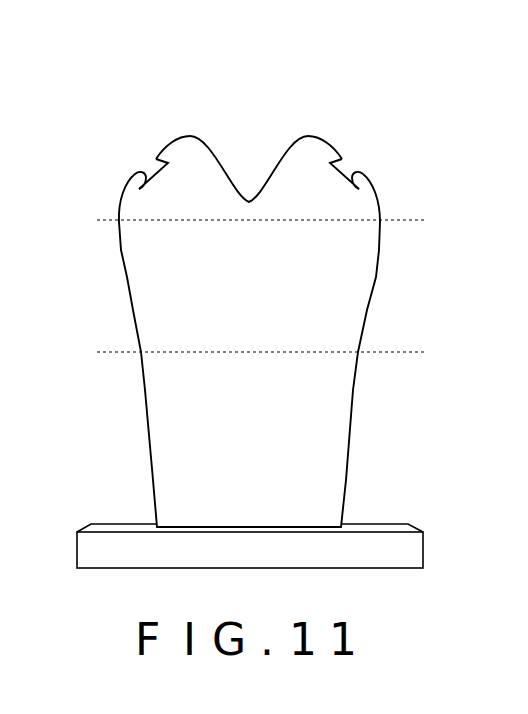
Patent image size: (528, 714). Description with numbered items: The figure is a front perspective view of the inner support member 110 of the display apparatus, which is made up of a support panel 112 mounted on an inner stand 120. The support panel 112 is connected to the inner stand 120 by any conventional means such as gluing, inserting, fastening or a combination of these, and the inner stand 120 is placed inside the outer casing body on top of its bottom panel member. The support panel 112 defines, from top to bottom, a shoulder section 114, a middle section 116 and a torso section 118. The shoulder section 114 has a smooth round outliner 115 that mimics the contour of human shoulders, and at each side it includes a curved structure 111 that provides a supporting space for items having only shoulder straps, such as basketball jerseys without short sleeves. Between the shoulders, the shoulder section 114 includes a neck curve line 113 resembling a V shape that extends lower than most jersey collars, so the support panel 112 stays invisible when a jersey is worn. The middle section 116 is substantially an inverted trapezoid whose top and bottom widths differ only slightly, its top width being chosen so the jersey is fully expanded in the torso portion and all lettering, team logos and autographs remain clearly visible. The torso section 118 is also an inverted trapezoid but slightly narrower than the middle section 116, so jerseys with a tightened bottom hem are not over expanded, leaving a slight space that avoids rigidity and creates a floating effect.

The inner support member 110 is at (255, 117).
The curved structure 111 is at (353, 172).
The support panel 112 is at (323, 322).
The neck curve line 113 is at (238, 184).
The shoulder section 114 is at (153, 208).
The smooth round outliner 115 is at (380, 192).
The middle section 116 is at (172, 318).
The torso section 118 is at (185, 455).
The inner stand 120 is at (393, 560).